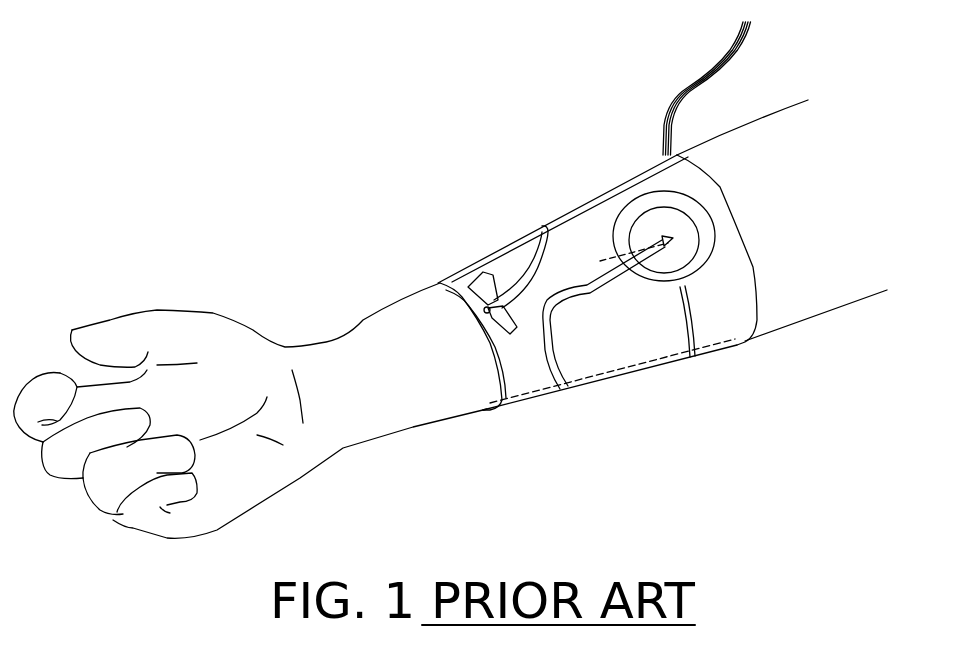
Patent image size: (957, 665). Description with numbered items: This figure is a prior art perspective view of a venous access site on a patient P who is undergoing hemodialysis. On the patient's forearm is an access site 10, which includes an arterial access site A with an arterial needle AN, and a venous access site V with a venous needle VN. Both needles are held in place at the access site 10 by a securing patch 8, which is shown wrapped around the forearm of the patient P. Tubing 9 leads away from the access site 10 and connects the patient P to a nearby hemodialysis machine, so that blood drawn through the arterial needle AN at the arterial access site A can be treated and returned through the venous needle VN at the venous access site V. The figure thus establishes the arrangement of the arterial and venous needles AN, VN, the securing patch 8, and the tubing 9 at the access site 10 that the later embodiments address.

The securing patch 8 is at (753, 341).
The tubing 9 is at (688, 80).
The access site 10 is at (809, 227).
The arterial access site A is at (458, 270).
The arterial needle AN is at (530, 270).
The venous access site V is at (563, 210).
The venous needle VN is at (647, 240).
The patient P is at (847, 307).